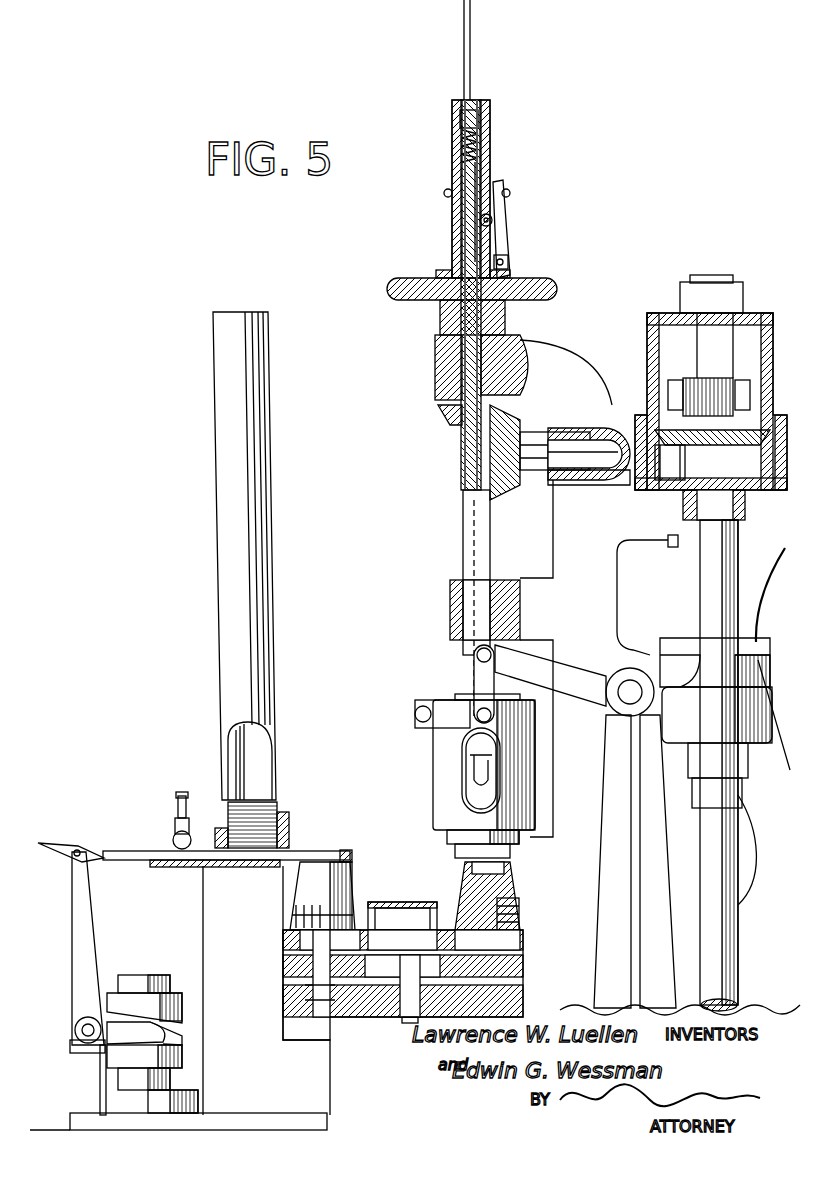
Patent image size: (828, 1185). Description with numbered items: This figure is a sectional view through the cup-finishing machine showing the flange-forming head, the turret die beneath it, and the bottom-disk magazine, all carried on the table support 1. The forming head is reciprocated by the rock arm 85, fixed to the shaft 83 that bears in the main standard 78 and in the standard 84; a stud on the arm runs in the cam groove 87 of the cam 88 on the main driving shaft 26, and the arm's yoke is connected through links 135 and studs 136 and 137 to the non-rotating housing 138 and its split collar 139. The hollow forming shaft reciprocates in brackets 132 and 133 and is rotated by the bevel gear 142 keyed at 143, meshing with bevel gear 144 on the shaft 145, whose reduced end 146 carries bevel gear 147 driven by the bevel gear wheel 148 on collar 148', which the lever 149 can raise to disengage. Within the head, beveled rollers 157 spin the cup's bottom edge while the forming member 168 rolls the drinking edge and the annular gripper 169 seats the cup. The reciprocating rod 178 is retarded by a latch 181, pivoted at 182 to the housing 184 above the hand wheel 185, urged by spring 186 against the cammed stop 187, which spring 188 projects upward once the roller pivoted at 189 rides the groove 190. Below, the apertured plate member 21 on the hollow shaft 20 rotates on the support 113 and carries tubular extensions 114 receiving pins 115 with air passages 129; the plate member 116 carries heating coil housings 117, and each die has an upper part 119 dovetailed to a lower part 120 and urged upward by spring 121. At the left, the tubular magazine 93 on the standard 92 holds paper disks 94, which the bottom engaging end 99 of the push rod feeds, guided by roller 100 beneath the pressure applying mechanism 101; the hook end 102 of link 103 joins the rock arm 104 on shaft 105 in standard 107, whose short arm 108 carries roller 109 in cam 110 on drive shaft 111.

The table support 1 is at (300, 1128).
The hollow shaft 20 is at (395, 1020).
The apertured plate member 21 is at (522, 1006).
The main driving shaft 26 is at (702, 588).
The main standard 78 is at (681, 722).
The shaft 83 is at (632, 688).
The standard 84 is at (657, 882).
The rock arm 85 is at (598, 695).
The cam groove 87 is at (746, 668).
The cam 88 is at (717, 747).
The standard 92 is at (268, 1085).
The tubular magazine 93 is at (272, 530).
The paper disks 94 is at (258, 802).
The bottom engaging end 99 is at (248, 868).
The anti-friction roller 100 is at (176, 838).
The adjustable pressure applying mechanism 101 is at (178, 802).
The hook end 102 is at (112, 862).
The link 103 is at (58, 842).
The rock arm 104 is at (75, 928).
The shaft 105 is at (76, 1031).
The standard 107 is at (100, 1082).
The short arm 108 is at (135, 1030).
The anti-friction roller 109 is at (175, 1022).
The cam 110 is at (180, 1000).
The drive shaft 111 is at (140, 977).
The table or support 113 is at (380, 1022).
The tubular extensions 114 is at (490, 1010).
The pins 115 is at (305, 1002).
The plate member 116 is at (522, 973).
The heating coil housings 117 is at (522, 938).
The upper die part 119 is at (470, 882).
The lower die part 120 is at (360, 905).
The spring 121 is at (512, 905).
The bores or passages 129 is at (520, 944).
The bracket 132 is at (450, 598).
The bracket 133 is at (435, 352).
The links 135 is at (498, 682).
The studs 136 is at (477, 656).
The studs 137 is at (478, 722).
The housing 138 is at (520, 798).
The split collar 139 is at (432, 706).
The bevel gear 142 is at (445, 418).
The key 143 is at (460, 445).
The bevel gear 144 is at (508, 492).
The shaft 145 is at (532, 440).
The reduced end 146 is at (592, 440).
The bevel gear 147 is at (668, 486).
The bevel gear wheel 148 is at (640, 490).
The collar 148' is at (694, 343).
The lever 149 is at (745, 385).
The beveled rollers 157 is at (478, 782).
The forming member 168 is at (520, 840).
The annular gripper 169 is at (512, 850).
The reciprocating rod 178 is at (472, 78).
The latch 181 is at (503, 188).
The pivot 182 is at (508, 263).
The housing 184 is at (452, 228).
The hand wheel 185 is at (556, 284).
The spring 186 is at (509, 197).
The cammed face stop member 187 is at (481, 116).
The spring 188 is at (481, 144).
The roller pivot 189 is at (492, 222).
The groove 190 is at (486, 172).